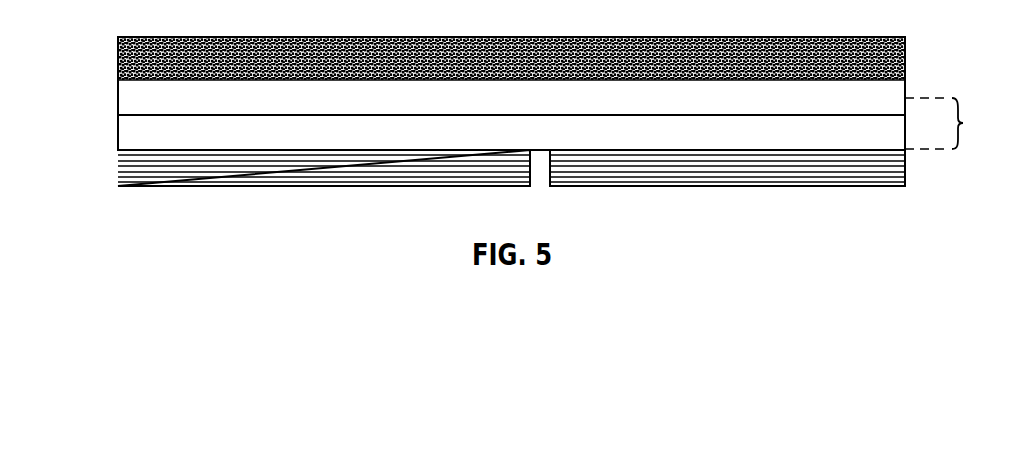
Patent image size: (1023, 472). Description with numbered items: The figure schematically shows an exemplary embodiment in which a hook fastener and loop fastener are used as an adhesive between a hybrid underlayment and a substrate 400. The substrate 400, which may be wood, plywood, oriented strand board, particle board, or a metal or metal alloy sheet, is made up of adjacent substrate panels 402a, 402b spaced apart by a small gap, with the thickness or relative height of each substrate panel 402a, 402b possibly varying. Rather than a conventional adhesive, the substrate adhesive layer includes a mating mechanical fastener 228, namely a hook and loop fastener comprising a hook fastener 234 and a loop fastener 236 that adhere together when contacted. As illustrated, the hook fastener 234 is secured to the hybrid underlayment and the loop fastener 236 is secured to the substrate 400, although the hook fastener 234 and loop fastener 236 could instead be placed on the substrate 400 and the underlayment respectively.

The mating mechanical fastener 228 is at (963, 123).
The hook fastener 234 is at (120, 97).
The loop fastener 236 is at (117, 132).
The substrate 400 is at (469, 186).
The substrate panel 402a is at (298, 170).
The substrate panel 402b is at (737, 170).